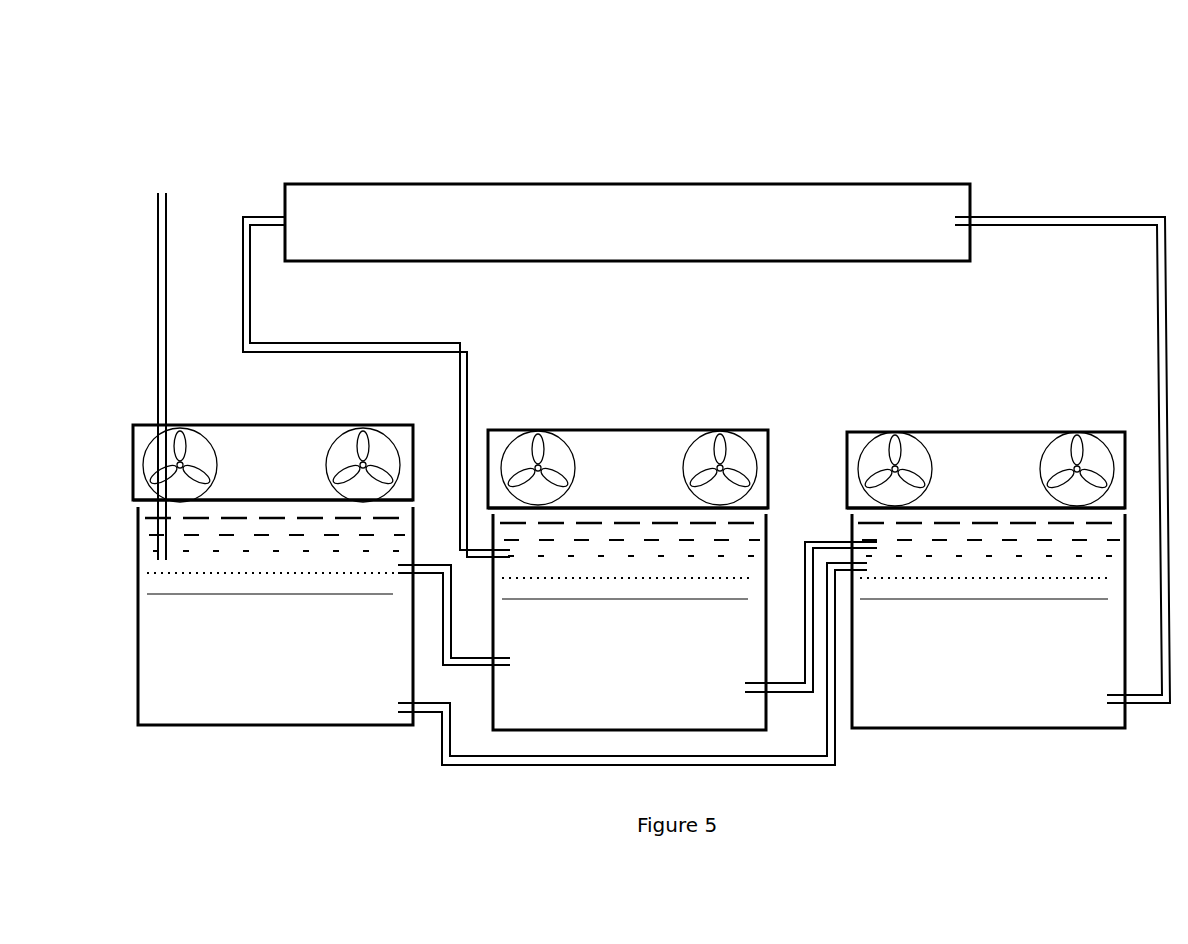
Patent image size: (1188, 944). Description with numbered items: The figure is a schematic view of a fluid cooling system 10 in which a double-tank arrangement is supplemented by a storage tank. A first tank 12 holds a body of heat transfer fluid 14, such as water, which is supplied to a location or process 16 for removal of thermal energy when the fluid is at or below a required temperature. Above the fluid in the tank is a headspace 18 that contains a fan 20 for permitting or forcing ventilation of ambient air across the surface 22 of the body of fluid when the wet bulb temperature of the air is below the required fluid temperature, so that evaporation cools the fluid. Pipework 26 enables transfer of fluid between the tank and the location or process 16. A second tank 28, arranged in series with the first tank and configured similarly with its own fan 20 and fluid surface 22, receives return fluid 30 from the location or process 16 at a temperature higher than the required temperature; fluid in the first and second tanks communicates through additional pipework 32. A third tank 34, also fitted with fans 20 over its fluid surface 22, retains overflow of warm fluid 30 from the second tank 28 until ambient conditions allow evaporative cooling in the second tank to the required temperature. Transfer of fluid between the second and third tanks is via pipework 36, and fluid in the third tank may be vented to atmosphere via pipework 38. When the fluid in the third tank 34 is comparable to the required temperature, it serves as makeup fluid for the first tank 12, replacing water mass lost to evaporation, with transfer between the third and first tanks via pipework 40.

The fluid cooling system 10 is at (1037, 124).
The tank 12 is at (986, 552).
The heat transfer fluid 14 is at (967, 708).
The location or process 16 is at (559, 183).
The headspace 18 is at (998, 450).
The fan 20 is at (182, 440).
The surface 22 is at (243, 499).
The pipework 26 is at (357, 341).
The second tank 28 is at (643, 526).
The return fluid 30 is at (728, 637).
The pipework 32 is at (807, 540).
The third tank 34 is at (226, 728).
The pipework 36 is at (442, 562).
The pipework 38 is at (167, 370).
The pipework 40 is at (490, 766).